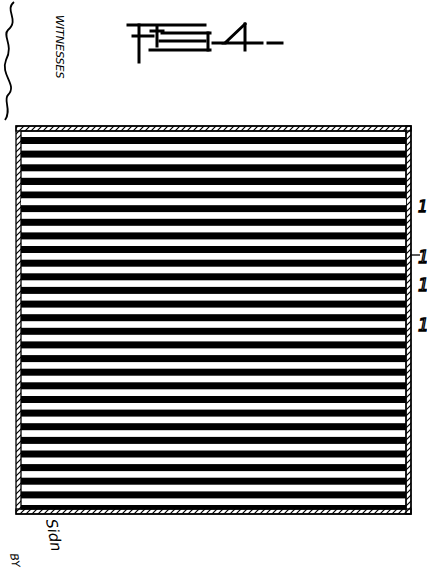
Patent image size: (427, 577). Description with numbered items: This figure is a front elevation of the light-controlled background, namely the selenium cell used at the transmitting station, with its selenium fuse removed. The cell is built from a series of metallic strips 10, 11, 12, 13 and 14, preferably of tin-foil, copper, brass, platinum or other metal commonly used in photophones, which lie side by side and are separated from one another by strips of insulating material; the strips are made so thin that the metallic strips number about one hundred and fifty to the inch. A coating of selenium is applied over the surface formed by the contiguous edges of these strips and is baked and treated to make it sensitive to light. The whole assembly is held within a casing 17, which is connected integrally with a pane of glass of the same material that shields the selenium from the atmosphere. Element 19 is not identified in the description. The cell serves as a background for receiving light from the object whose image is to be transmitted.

The metallic strip 10 is at (174, 194).
The metallic strip 11 is at (155, 180).
The metallic strip 12 is at (337, 165).
The metallic strip 13 is at (313, 152).
The metallic strip 14 is at (287, 140).
The casing 17 is at (160, 512).
The space between slats 19 is at (195, 207).